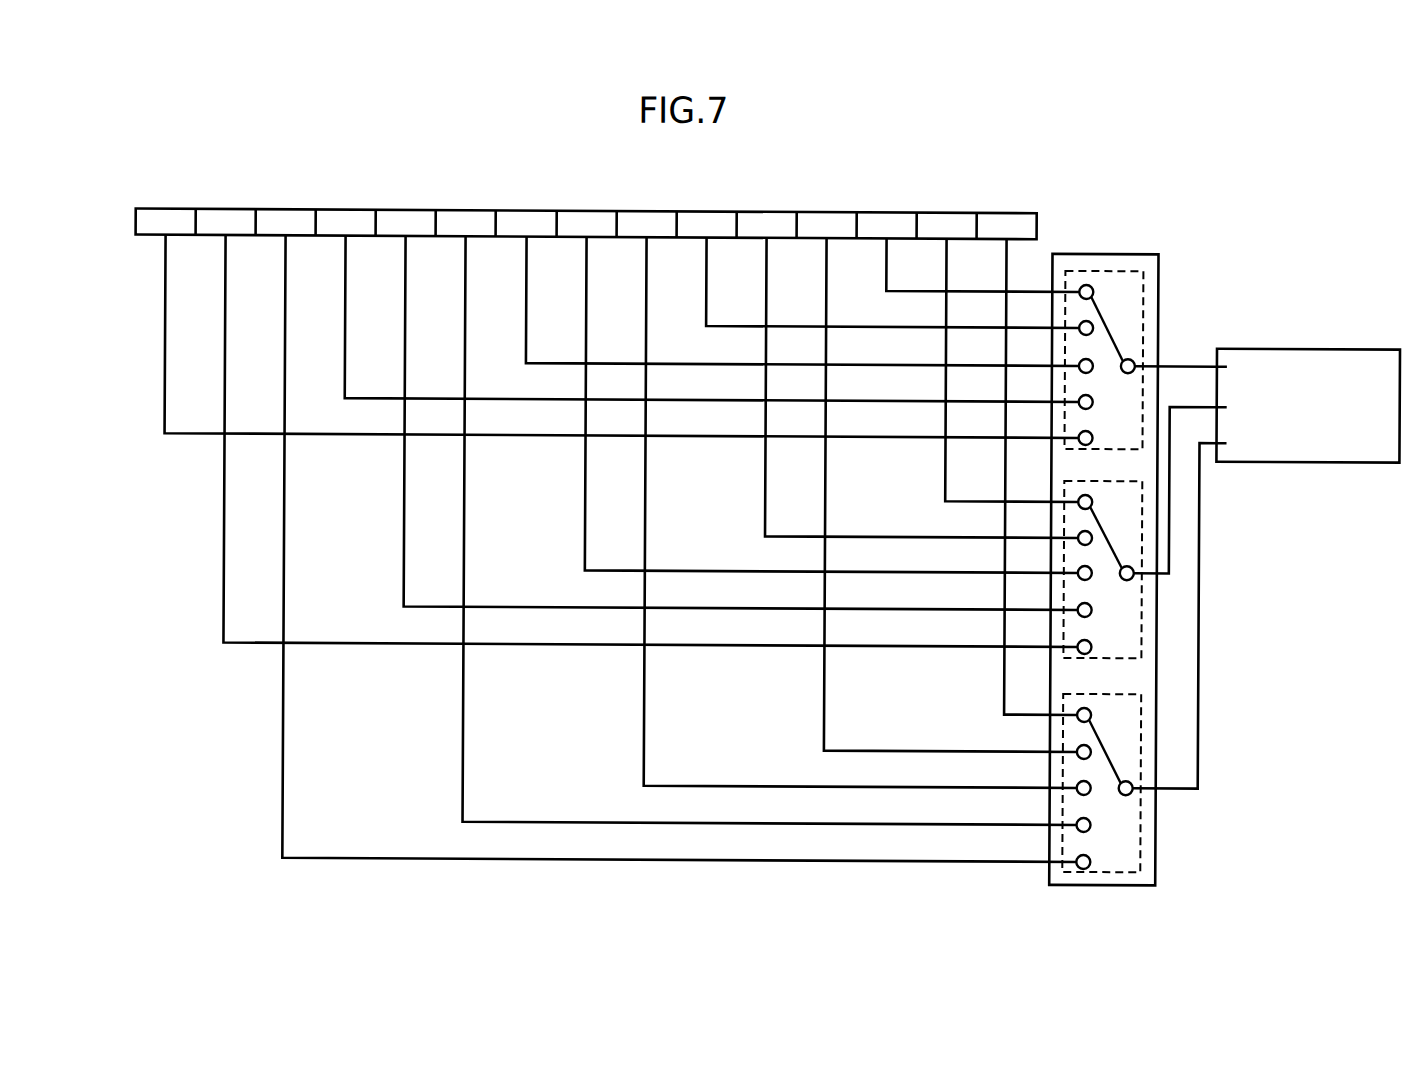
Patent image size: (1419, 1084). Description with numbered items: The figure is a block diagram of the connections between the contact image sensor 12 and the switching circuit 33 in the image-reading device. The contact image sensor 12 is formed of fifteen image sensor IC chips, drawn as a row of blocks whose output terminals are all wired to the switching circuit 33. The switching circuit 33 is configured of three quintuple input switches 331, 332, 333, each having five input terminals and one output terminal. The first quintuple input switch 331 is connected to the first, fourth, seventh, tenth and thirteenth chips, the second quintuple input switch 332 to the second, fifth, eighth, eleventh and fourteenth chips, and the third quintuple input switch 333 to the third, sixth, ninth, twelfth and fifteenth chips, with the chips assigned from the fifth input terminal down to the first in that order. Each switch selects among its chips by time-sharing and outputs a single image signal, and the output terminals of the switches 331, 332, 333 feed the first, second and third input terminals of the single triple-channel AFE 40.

The contact image sensor 12 is at (738, 197).
The switching circuit 33 is at (1123, 250).
The first quintuple input switch 331 is at (1142, 289).
The second quintuple input switch 332 is at (1142, 518).
The third quintuple input switch 333 is at (1142, 825).
The triple-channel AFE 40 is at (1337, 346).